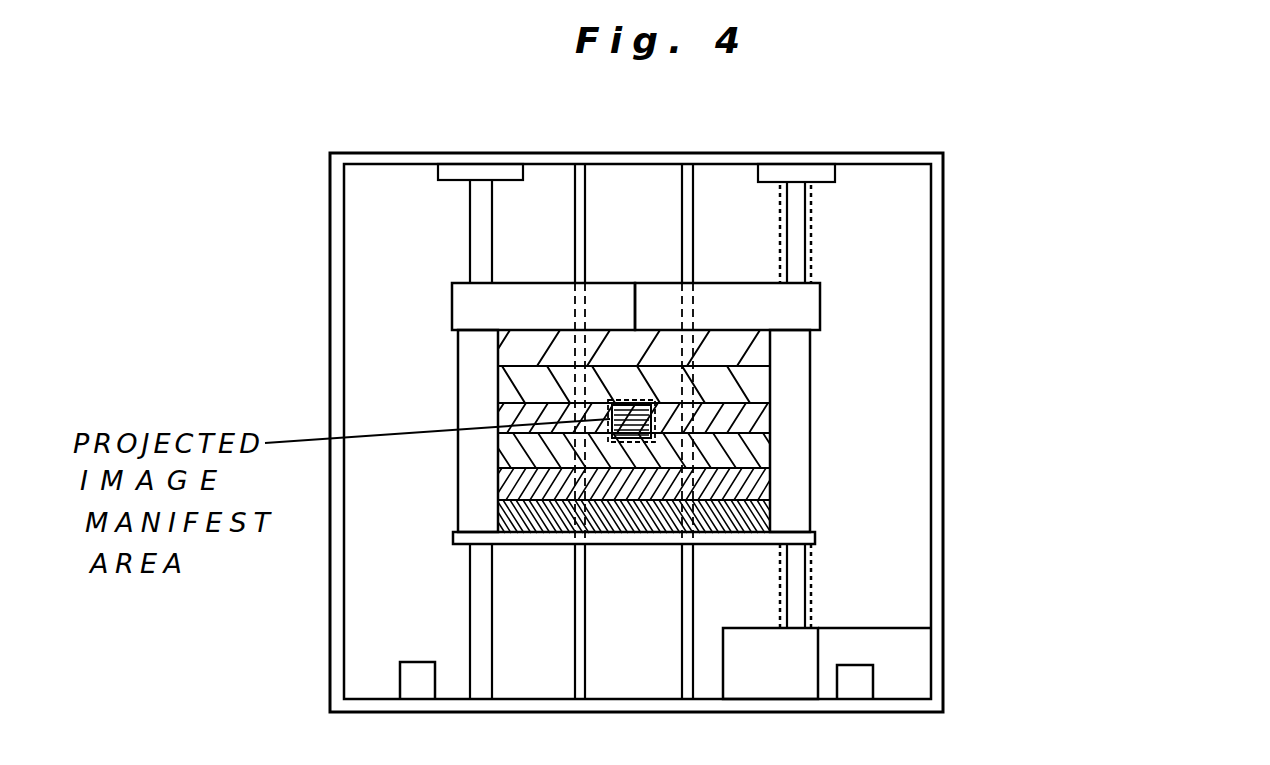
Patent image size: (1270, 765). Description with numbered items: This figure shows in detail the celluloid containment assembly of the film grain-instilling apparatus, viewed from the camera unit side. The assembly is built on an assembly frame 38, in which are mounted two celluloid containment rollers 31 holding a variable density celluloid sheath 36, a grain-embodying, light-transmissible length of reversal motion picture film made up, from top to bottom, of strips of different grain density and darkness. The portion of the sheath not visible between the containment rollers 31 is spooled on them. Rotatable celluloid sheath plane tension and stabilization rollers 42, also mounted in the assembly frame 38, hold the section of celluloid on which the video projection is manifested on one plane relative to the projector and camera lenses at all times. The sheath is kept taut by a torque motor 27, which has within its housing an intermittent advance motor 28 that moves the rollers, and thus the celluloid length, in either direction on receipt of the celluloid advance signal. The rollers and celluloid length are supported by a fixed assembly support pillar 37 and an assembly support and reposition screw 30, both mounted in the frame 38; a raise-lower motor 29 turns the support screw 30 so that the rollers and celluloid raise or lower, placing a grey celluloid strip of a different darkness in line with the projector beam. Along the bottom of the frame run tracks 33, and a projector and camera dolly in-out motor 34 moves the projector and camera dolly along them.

The assembly frame 38 is at (682, 132).
The celluloid sheath plane tension/stabilization rollers 42 is at (682, 192).
The fixed assembly support pillar 37 is at (483, 223).
The assembly support/reposition screw 30 is at (815, 232).
The torque motor 27 is at (257, 227).
The intermittent advance motor 28 is at (795, 317).
The assembly celluloid containment rollers 31 is at (477, 483).
The variable density celluloid sheath/length 36 is at (753, 390).
The roller/celluloid sheath assembly raise-lower motor 29 is at (755, 605).
The projector and camera dolly in-out motor 34 is at (843, 638).
The tracks 33 is at (400, 667).